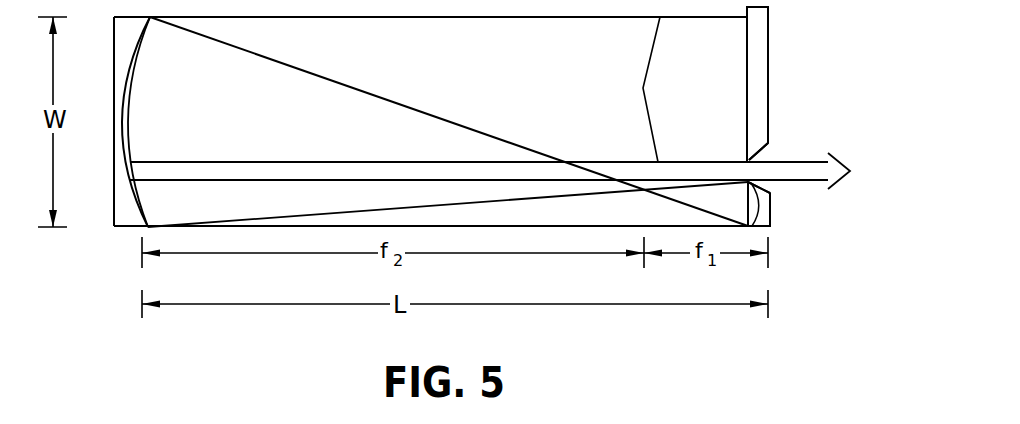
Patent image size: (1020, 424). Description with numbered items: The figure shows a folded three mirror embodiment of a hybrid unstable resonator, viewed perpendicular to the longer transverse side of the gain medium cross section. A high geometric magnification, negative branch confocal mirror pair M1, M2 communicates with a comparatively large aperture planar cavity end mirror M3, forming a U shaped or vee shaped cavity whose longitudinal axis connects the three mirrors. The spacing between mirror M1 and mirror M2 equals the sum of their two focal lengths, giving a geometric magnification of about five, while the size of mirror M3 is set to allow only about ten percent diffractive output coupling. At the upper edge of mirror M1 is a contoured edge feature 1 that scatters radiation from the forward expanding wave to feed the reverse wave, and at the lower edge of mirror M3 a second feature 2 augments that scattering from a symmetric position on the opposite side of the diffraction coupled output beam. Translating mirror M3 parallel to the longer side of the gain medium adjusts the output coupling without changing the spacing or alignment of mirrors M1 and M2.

The contoured edge feature 1 is at (745, 184).
The scattering edge feature 2 is at (742, 153).
The mirror M1 is at (780, 204).
The mirror M2 is at (112, 122).
The mirror M3 is at (778, 84).